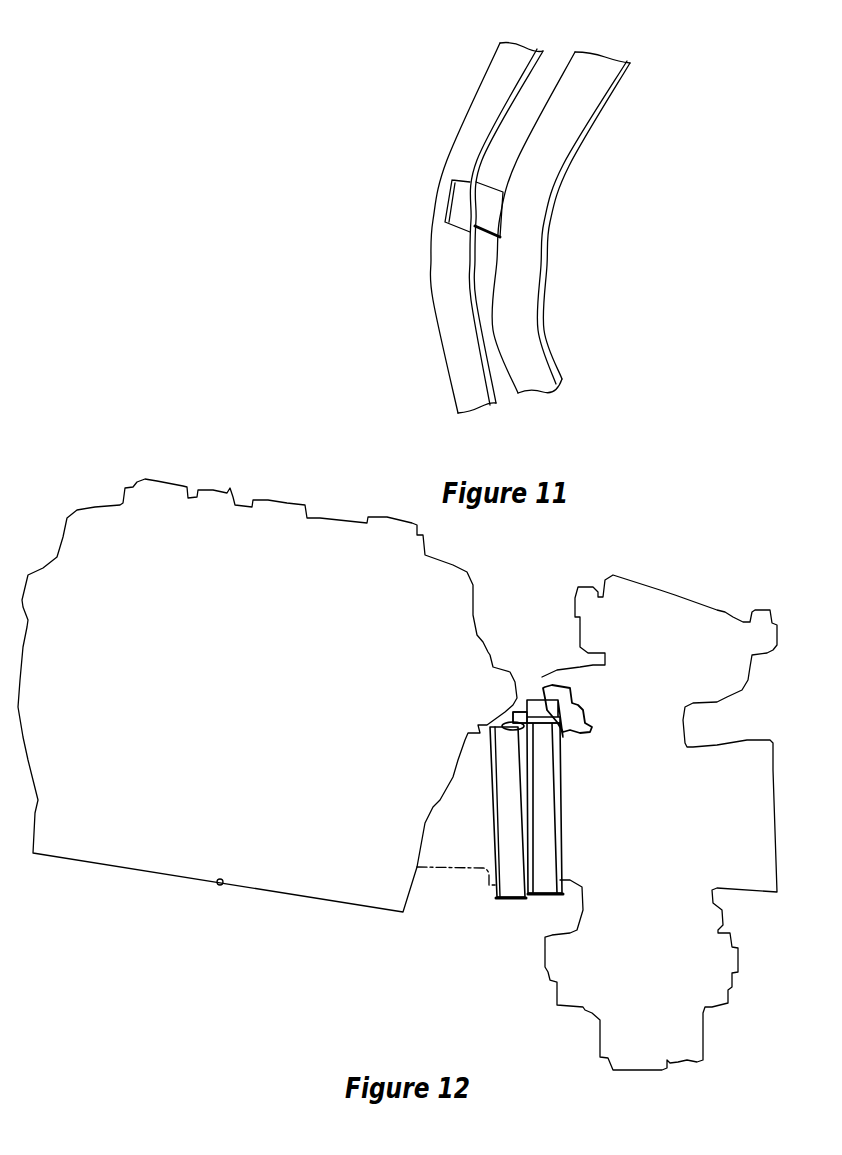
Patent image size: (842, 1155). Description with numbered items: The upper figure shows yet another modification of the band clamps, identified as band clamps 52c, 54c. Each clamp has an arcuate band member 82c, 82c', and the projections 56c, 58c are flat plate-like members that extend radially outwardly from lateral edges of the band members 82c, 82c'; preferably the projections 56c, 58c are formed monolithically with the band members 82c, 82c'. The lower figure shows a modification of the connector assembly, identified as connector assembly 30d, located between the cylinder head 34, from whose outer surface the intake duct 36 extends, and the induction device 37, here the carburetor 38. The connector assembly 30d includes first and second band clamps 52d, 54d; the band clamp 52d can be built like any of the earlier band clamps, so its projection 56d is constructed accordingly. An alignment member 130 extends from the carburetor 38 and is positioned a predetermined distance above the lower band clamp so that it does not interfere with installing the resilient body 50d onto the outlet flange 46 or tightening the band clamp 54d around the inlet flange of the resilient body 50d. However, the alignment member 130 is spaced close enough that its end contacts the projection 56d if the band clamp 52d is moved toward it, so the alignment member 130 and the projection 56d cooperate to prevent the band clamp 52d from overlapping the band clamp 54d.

In FIG. 11, the band clamp 52c is at (480, 78).
In FIG. 11, the band clamp 54c is at (587, 115).
In FIG. 11, the projection 56c is at (453, 197).
In FIG. 11, the projection 58c is at (493, 200).
In FIG. 11, the band member 82c is at (421, 228).
In FIG. 11, the band member 82c' is at (568, 222).
In FIG. 12, the cylinder head 34 is at (227, 491).
In FIG. 12, the intake duct 36 is at (430, 868).
In FIG. 12, the induction device 37 is at (700, 552).
In FIG. 12, the carburetor 38 is at (717, 605).
In FIG. 12, the outlet flange 46 is at (572, 882).
In FIG. 12, the connector assembly 30d is at (527, 686).
In FIG. 12, the alignment member 130 is at (552, 708).
In FIG. 12, the projection 56d is at (522, 710).
In FIG. 12, the resilient body 50d is at (490, 835).
In FIG. 12, the band clamp 52d is at (508, 900).
In FIG. 12, the band clamp 54d is at (543, 895).